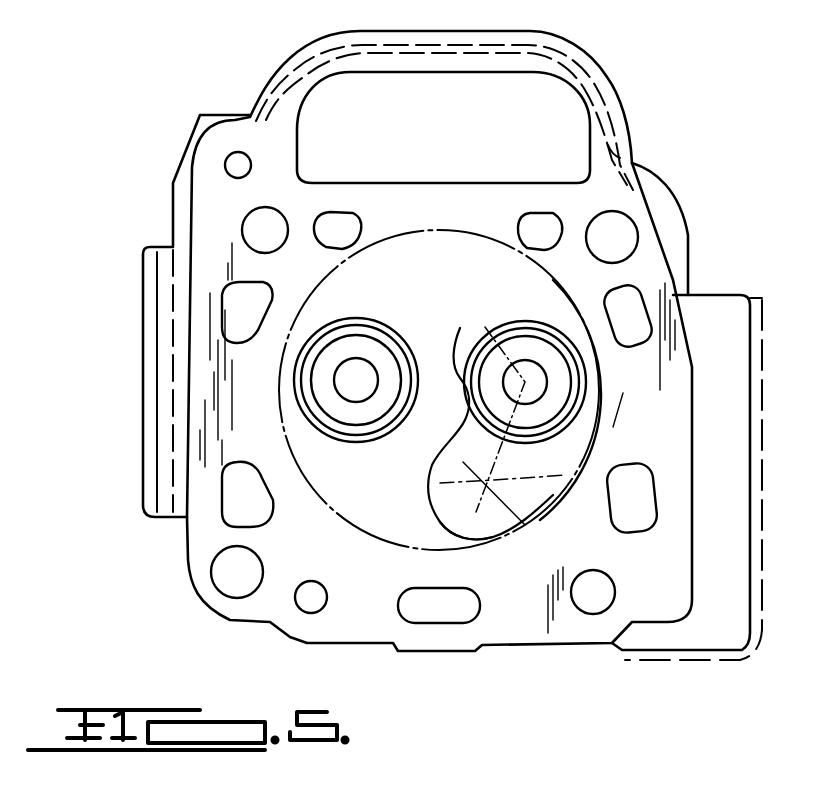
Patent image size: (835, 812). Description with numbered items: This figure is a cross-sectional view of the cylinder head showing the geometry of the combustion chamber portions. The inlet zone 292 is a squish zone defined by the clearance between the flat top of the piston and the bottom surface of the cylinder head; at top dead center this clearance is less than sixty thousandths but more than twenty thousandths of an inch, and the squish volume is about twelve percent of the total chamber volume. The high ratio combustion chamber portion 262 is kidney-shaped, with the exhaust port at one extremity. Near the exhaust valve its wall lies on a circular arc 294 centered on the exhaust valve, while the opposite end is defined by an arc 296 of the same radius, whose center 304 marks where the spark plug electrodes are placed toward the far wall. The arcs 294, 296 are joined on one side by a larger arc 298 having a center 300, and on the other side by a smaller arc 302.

The high ratio combustion chamber portion 262 is at (440, 483).
The inlet zone 292 is at (465, 284).
The circular arc 294 is at (555, 326).
The arc 296 is at (474, 532).
The larger arc 298 is at (553, 485).
The center 300 is at (435, 408).
The smaller arc 302 is at (489, 423).
The center of the arc 304 is at (522, 524).